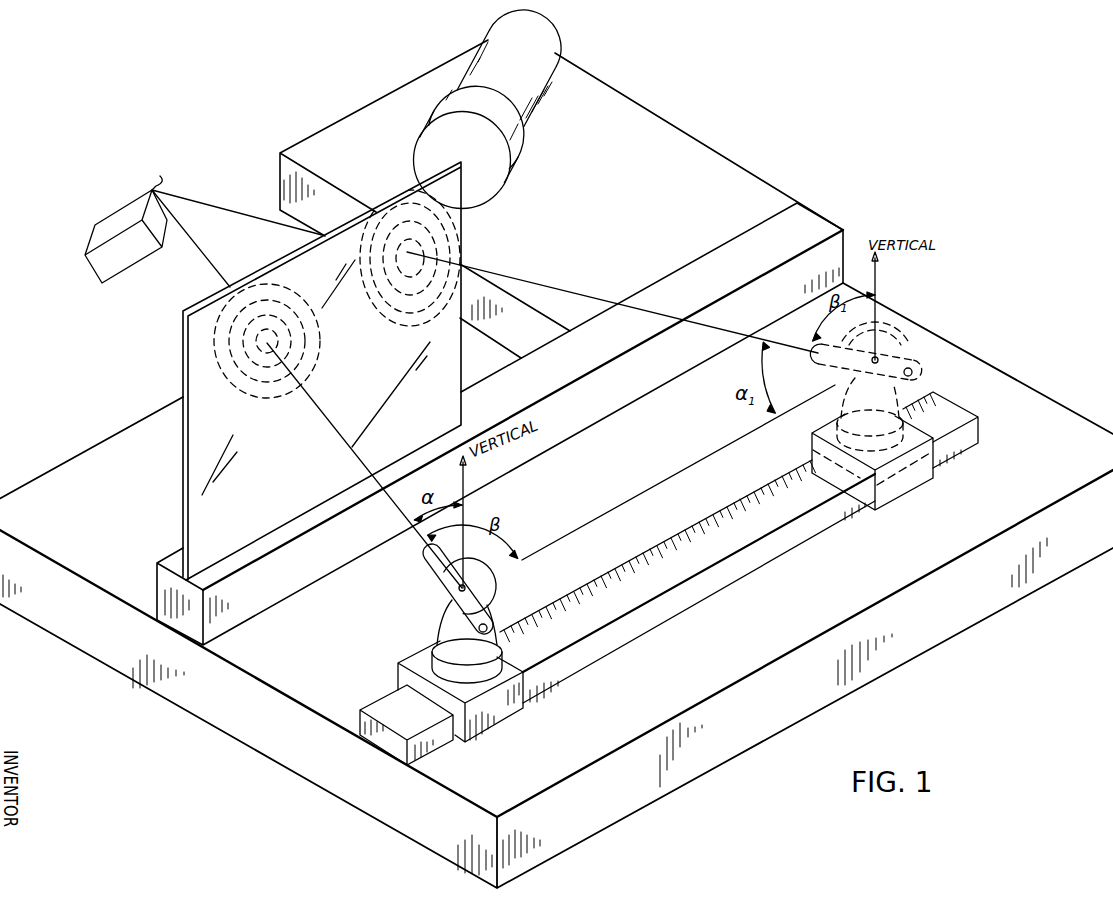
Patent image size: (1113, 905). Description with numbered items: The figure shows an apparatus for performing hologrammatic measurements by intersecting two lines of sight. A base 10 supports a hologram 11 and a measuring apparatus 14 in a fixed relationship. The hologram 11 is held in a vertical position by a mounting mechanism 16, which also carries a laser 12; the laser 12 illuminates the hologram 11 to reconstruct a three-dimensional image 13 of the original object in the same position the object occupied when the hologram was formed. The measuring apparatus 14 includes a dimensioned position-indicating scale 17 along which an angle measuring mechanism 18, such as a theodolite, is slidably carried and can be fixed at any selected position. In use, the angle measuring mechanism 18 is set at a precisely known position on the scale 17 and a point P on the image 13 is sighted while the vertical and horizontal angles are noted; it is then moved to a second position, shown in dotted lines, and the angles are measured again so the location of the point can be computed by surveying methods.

The base 10 is at (293, 773).
The hologram 11 is at (181, 497).
The laser 12 is at (547, 60).
The image 13 is at (102, 283).
The measuring apparatus 14 is at (385, 691).
The mounting mechanism 16 is at (306, 574).
The scale 17 is at (600, 648).
The angle measuring mechanism 18 is at (477, 607).